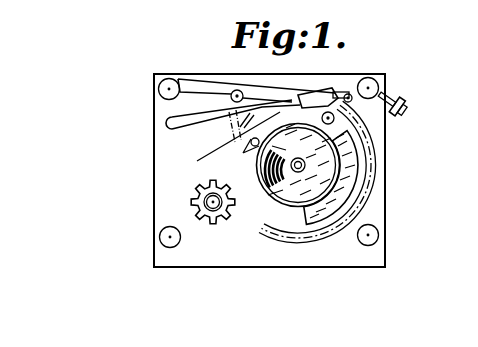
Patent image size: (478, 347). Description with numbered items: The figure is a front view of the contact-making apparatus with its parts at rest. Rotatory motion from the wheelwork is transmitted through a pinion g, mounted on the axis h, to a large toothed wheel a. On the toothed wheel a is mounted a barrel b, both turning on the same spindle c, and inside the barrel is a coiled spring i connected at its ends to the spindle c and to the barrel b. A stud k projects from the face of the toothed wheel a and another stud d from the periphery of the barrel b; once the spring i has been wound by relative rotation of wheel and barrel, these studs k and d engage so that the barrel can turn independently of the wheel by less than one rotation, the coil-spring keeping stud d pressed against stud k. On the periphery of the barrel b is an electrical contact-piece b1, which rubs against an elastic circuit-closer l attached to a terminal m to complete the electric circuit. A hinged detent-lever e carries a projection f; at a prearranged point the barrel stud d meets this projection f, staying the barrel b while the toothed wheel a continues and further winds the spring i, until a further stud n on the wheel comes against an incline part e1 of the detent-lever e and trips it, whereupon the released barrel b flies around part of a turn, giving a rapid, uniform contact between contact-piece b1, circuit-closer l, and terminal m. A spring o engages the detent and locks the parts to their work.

The toothed wheel a is at (242, 223).
The barrel b is at (302, 205).
The electrical contact-piece b1 is at (306, 165).
The spindle c is at (330, 168).
The stud d is at (237, 153).
The detent-lever e is at (310, 92).
The incline part e1 is at (232, 121).
The projection f is at (345, 86).
The pinion g is at (195, 203).
The axis h is at (195, 207).
The coiled spring i is at (280, 186).
The stud k is at (240, 162).
The circuit-closer l is at (166, 124).
The terminal m is at (412, 95).
The stud n is at (333, 118).
The spring o is at (203, 80).